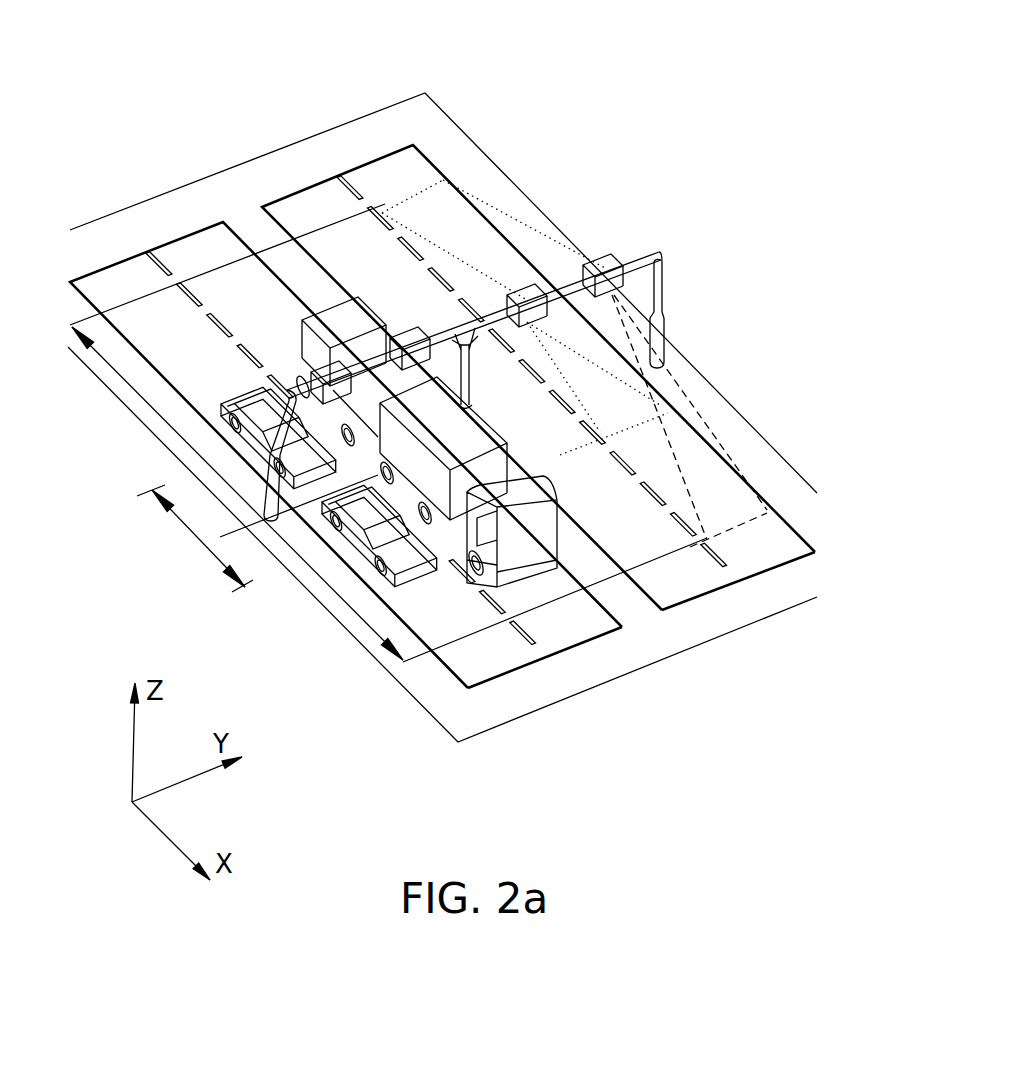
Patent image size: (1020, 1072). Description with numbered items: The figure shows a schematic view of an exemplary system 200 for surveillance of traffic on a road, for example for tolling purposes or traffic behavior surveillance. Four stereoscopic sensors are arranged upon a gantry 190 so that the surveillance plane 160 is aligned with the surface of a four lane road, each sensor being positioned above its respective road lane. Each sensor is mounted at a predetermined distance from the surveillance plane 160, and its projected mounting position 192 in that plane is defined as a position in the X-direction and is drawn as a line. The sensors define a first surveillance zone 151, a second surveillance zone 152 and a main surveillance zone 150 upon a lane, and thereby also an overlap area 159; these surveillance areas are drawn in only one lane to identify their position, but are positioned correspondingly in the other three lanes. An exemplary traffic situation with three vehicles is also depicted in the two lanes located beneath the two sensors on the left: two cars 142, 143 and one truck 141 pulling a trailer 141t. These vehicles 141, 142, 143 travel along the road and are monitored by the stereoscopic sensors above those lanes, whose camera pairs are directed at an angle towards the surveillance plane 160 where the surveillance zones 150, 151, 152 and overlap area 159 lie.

The system for surveillance 200 is at (708, 60).
The truck 141 is at (478, 495).
The trailer 141t is at (360, 323).
The car 142 is at (253, 410).
The car 143 is at (367, 557).
The main surveillance zone 150 is at (245, 498).
The first surveillance zone 151 is at (458, 218).
The second surveillance zone 152 is at (745, 505).
The overlap area 159 is at (197, 540).
The surveillance plane 160 is at (453, 340).
The gantry 190 is at (664, 292).
The projected mounting position 192 is at (700, 348).